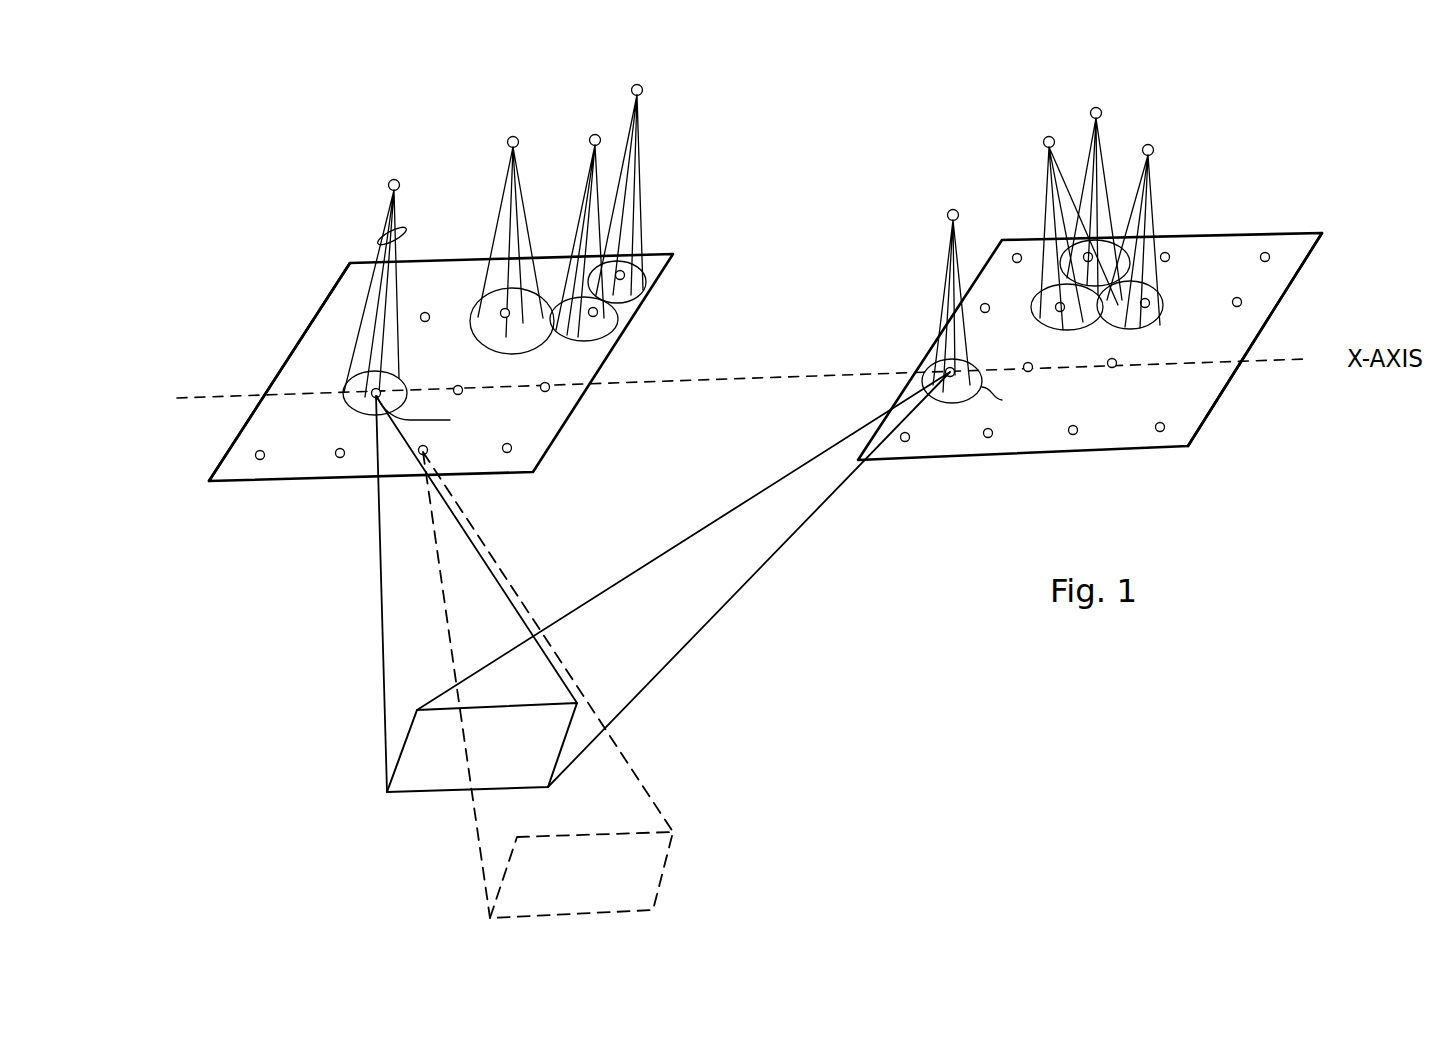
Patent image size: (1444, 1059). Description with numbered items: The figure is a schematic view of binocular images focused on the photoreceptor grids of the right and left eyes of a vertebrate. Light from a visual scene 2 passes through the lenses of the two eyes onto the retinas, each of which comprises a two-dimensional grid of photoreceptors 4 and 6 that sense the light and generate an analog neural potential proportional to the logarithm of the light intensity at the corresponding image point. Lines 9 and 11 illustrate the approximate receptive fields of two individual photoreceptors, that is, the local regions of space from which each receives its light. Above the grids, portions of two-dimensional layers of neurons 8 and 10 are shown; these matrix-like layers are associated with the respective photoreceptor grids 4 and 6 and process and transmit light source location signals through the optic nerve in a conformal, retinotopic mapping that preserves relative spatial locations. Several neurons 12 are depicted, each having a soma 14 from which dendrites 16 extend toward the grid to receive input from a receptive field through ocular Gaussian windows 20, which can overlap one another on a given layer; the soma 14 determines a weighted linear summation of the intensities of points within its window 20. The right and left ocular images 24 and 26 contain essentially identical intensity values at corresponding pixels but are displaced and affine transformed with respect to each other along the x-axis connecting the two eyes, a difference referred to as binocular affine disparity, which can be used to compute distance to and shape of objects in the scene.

The visual scene 2 is at (640, 767).
The photoreceptor grid 4 is at (1188, 447).
The photoreceptor grid 6 is at (232, 444).
The layer of neurons 8 is at (1163, 92).
The receptive field lines 9 is at (777, 543).
The layer of neurons 10 is at (653, 88).
The receptive field lines 11 is at (476, 594).
The neuron 12 is at (381, 194).
The soma 14 is at (389, 184).
The dendrite 16 is at (402, 229).
The ocular Gaussian window 20 is at (633, 301).
The right ocular image 24 is at (1203, 408).
The left ocular image 26 is at (297, 365).